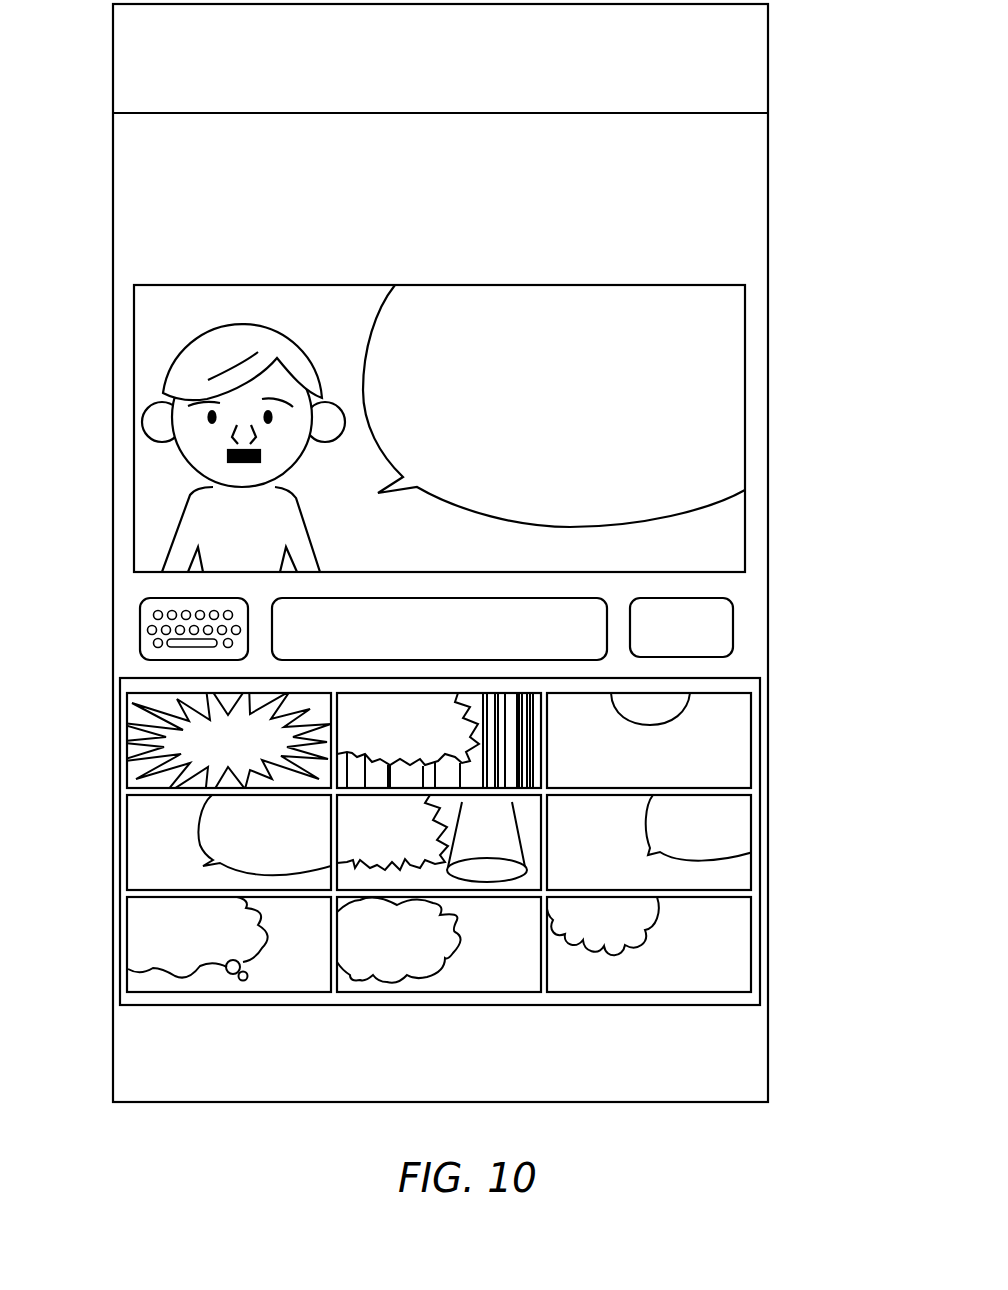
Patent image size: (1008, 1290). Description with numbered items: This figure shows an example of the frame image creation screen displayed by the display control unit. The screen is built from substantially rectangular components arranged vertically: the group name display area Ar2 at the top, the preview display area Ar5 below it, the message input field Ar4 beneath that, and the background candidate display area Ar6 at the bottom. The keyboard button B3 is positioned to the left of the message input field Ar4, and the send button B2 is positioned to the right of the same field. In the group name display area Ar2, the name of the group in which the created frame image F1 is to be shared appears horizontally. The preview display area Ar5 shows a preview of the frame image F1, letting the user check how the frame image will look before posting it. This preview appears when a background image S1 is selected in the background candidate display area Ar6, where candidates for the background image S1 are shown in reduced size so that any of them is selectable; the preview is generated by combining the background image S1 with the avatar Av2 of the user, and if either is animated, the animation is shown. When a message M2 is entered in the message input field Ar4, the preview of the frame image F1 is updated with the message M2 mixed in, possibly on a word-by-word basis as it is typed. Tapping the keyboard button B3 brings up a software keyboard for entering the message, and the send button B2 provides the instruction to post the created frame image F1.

The group name display area Ar2 is at (752, 60).
The preview display area Ar5 is at (490, 399).
The message M2 is at (590, 316).
The avatar Av2 is at (275, 525).
The frame image F1 is at (745, 458).
The background image S1 is at (491, 399).
The message input field Ar4 is at (465, 612).
The keyboard button B3 is at (148, 612).
The send button B2 is at (725, 633).
The background candidate display area Ar6 is at (760, 790).